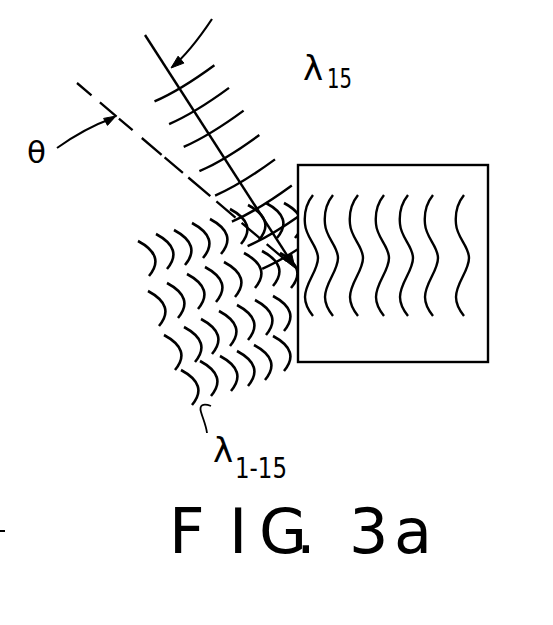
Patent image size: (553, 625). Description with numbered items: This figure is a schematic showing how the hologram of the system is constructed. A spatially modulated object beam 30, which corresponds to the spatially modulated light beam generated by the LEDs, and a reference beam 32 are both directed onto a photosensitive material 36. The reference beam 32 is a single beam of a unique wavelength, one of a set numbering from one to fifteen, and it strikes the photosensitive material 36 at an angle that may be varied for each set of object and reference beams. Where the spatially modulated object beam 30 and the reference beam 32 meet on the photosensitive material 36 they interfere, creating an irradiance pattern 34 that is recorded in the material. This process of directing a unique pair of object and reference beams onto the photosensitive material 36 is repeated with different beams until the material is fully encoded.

The spatially modulated object beam 30 is at (176, 400).
The reference beam 32 is at (198, 75).
The irradiance pattern 34 is at (328, 313).
The photosensitive material 36 is at (432, 182).